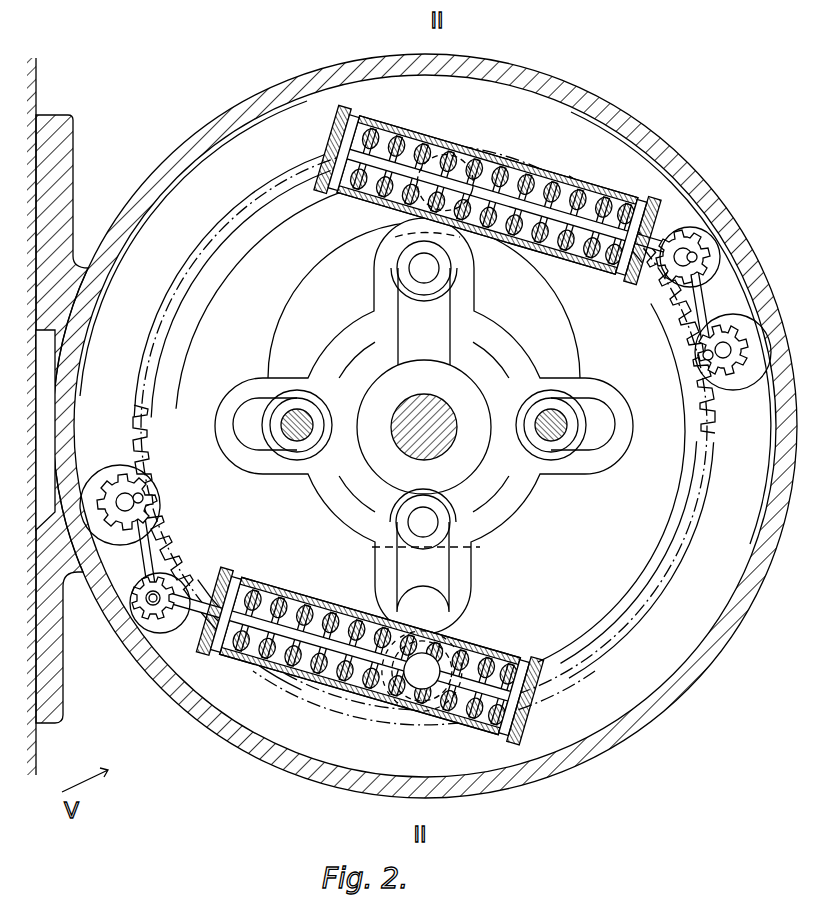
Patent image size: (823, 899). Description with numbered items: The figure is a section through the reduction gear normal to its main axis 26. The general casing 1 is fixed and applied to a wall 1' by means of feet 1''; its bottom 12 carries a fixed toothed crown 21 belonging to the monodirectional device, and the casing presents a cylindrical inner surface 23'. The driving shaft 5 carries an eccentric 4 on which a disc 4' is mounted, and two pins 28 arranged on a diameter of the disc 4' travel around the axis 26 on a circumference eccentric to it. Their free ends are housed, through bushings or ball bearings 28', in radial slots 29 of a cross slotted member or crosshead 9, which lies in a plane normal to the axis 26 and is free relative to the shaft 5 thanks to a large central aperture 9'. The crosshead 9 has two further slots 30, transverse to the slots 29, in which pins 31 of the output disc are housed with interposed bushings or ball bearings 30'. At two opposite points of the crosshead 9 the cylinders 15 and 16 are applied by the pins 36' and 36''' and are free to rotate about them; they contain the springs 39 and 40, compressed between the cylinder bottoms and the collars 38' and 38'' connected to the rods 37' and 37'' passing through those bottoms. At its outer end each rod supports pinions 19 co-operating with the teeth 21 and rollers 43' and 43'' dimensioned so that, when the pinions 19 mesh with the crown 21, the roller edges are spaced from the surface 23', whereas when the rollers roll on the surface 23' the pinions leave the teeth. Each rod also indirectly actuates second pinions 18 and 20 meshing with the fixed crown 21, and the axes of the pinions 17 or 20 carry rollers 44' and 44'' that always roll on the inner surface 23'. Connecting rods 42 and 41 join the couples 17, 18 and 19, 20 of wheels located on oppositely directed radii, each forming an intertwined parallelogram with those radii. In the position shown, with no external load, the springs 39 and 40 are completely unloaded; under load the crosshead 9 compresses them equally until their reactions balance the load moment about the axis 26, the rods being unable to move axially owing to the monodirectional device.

The casing 1 is at (425, 426).
The wall 1' is at (55, 408).
The feet 1'' is at (68, 401).
The bottom 12 is at (238, 266).
The cylindrical inner surface 23' is at (656, 419).
The fixed toothed crown 21 is at (140, 432).
The eccentric 4 is at (424, 426).
The disc 4' is at (440, 309).
The cross slotted member 9 is at (512, 511).
The central aperture 9' is at (424, 427).
The shaft 5 is at (440, 404).
The main axis 26 is at (420, 424).
The radial slots 29 is at (452, 312).
The pins 28 is at (453, 395).
The bushings or ball bearings 28' is at (427, 426).
The slots 30 is at (428, 448).
The bushings or ball bearings 30' is at (455, 440).
The pins 31 is at (298, 418).
The cylinder 16 is at (400, 124).
The rod 37'' is at (492, 196).
The spring 40 is at (500, 172).
The collar 38'' is at (487, 185).
The pin 36''' is at (450, 157).
The cylinder 15 is at (352, 694).
The rod 37' is at (371, 658).
The spring 39 is at (286, 664).
The collar 38' is at (384, 656).
The pin 36' is at (421, 689).
The connecting rod 42 is at (703, 302).
The pinion 17 is at (680, 232).
The roller 43'' is at (724, 249).
The second pinion 18 is at (736, 372).
The roller 44'' is at (733, 387).
The connecting rod 41 is at (148, 542).
The second pinion 20 is at (120, 490).
The roller 44' is at (116, 549).
The pinions 19 is at (158, 614).
The rollers 43' is at (147, 634).